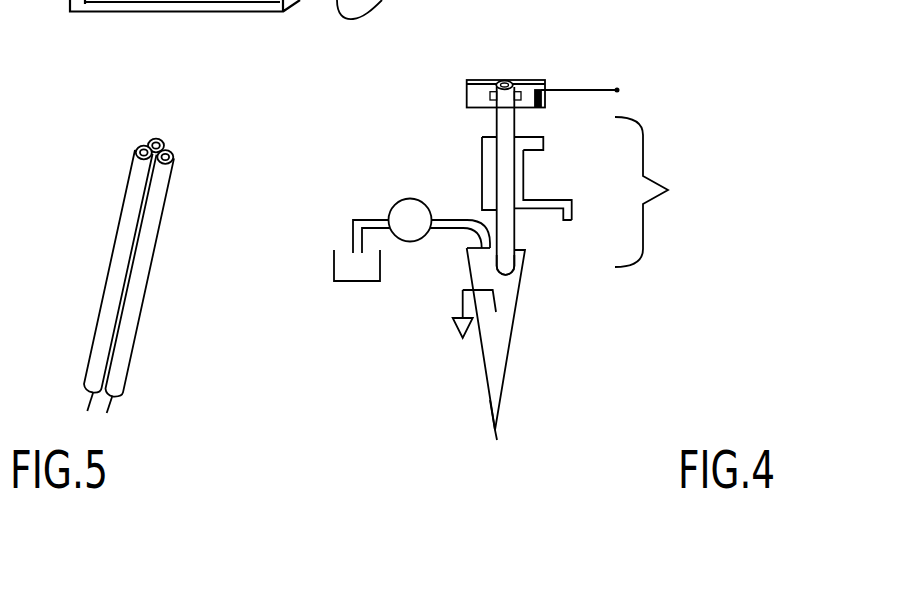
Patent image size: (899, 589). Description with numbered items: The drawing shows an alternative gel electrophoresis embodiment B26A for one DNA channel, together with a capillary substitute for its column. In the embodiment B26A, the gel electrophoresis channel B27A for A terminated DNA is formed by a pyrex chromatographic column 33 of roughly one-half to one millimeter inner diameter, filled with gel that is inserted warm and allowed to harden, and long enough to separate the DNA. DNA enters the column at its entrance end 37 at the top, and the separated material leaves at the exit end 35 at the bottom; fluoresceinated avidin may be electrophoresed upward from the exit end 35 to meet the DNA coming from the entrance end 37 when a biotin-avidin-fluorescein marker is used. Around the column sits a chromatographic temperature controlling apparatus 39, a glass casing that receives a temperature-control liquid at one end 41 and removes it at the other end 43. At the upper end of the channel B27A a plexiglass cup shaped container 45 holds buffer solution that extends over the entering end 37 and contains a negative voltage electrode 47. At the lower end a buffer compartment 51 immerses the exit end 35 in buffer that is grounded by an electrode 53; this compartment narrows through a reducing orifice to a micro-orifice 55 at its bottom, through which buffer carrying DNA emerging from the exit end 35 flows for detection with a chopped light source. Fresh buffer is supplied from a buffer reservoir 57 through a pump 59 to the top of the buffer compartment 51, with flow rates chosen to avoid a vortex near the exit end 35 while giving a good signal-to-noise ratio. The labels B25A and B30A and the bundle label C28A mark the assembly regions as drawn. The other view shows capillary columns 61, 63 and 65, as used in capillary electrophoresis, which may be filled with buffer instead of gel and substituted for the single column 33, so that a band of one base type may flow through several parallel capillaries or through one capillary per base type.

In FIG. 4, the chromatographic column 33 is at (503, 128).
In FIG. 4, the exit end 35 is at (509, 258).
In FIG. 4, the entrance end 37 is at (503, 83).
In FIG. 4, the chromatographic temperature controlling apparatus 39 is at (518, 190).
In FIG. 4, the liquid inlet end 41 is at (543, 146).
In FIG. 4, the liquid outlet end 43 is at (565, 222).
In FIG. 4, the cup shaped container 45 is at (467, 96).
In FIG. 4, the negative voltage electrode 47 is at (573, 90).
In FIG. 4, the buffer compartment 51 is at (492, 353).
In FIG. 4, the electrode 53 is at (463, 290).
In FIG. 4, the micro-orifice 55 is at (496, 440).
In FIG. 4, the buffer reservoir 57 is at (357, 283).
In FIG. 4, the pump 59 is at (403, 217).
In FIG. 5, the capillary column 61 is at (111, 262).
In FIG. 5, the capillary column 63 is at (148, 145).
In FIG. 5, the capillary column 65 is at (145, 277).
In FIG. 4, the assembly B25A is at (520, 81).
In FIG. 4, the gel electrophoresis embodiment B26A is at (740, 122).
In FIG. 4, the gel electrophoresis channel B27A is at (628, 196).
In FIG. 4, the spray B30A is at (526, 344).
In FIG. 5, the tube bundle C28A is at (232, 164).